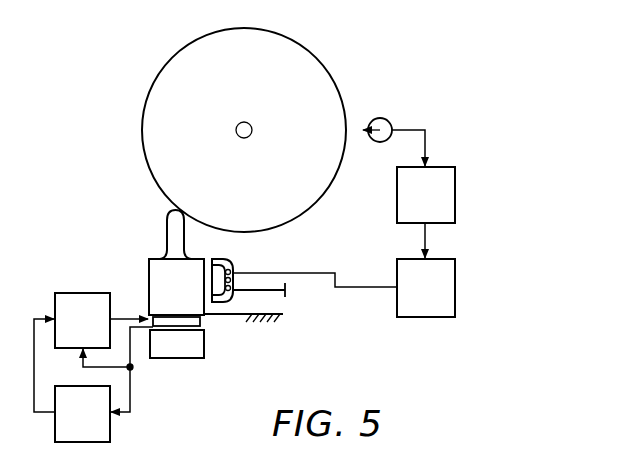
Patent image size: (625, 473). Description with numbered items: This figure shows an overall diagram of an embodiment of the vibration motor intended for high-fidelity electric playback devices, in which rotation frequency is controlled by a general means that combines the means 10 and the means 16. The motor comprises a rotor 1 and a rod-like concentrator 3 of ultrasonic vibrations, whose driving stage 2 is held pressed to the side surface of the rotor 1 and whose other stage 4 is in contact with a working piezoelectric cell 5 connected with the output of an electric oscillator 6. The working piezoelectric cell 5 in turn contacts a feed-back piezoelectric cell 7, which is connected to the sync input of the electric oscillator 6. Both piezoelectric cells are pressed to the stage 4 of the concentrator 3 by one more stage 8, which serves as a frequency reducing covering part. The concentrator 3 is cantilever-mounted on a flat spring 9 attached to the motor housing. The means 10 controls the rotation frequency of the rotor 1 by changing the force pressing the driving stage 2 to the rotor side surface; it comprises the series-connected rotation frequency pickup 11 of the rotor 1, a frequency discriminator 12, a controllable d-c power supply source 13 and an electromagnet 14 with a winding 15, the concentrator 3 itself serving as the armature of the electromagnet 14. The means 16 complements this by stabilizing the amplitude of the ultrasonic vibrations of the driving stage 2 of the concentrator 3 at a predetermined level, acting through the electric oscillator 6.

The rotor 1 is at (143, 112).
The driving stage 2 is at (167, 222).
The rod-like concentrator of ultrasonic vibrations 3 is at (141, 254).
The other stage of the concentrator 4 is at (157, 298).
The working piezoelectric cell 5 is at (201, 317).
The electric oscillator 6 is at (82, 320).
The feed-back piezoelectric cell 7 is at (165, 333).
The frequency reducing covering part stage 8 is at (195, 352).
The flat spring 9 is at (239, 316).
The means for control of rotation frequency by changing pressing force 10 is at (467, 239).
The rotation frequency pickup 11 is at (383, 118).
The frequency discriminator 12 is at (426, 195).
The controllable d-c power supply source 13 is at (426, 288).
The electromagnet 14 is at (244, 299).
The winding 15 is at (236, 276).
The means for control of rotation frequency by stabilizing vibration amplitude 16 is at (82, 414).